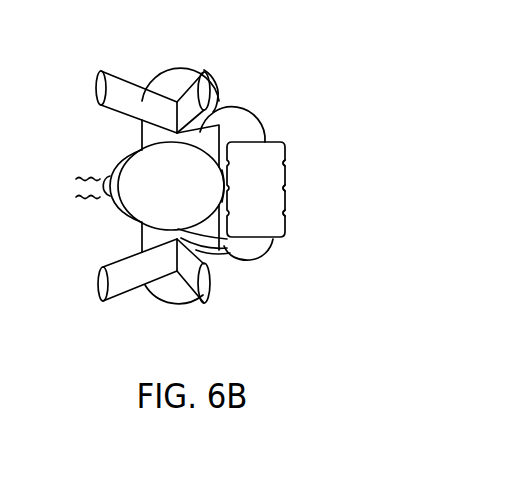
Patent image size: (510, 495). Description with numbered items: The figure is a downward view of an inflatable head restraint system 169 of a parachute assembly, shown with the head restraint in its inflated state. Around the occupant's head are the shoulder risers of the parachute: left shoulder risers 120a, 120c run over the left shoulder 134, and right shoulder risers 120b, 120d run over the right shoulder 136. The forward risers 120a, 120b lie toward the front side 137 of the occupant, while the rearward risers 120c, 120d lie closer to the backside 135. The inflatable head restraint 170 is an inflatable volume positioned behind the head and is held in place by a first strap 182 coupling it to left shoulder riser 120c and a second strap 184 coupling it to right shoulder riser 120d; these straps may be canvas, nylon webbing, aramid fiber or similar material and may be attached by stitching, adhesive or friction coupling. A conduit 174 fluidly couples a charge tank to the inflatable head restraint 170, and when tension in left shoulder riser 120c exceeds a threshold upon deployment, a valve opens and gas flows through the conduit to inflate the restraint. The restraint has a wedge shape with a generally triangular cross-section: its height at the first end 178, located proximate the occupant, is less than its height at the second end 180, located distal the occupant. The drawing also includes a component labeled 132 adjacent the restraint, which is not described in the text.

The inflatable head restraint system 169 is at (334, 93).
The front side 137 is at (140, 133).
The right shoulder 136 is at (172, 72).
The left shoulder 134 is at (174, 296).
The right shoulder riser 120b is at (101, 71).
The right shoulder riser 120d is at (192, 90).
The backside 135 is at (218, 93).
The left shoulder riser 120a is at (122, 270).
The left shoulder riser 120c is at (210, 276).
The valve element 132 is at (152, 205).
The first end 178 is at (225, 177).
The second strap 184 is at (250, 132).
The second end 180 is at (285, 158).
The inflatable head restraint 170 is at (270, 194).
The conduit 174 is at (226, 254).
The first strap 182 is at (243, 248).